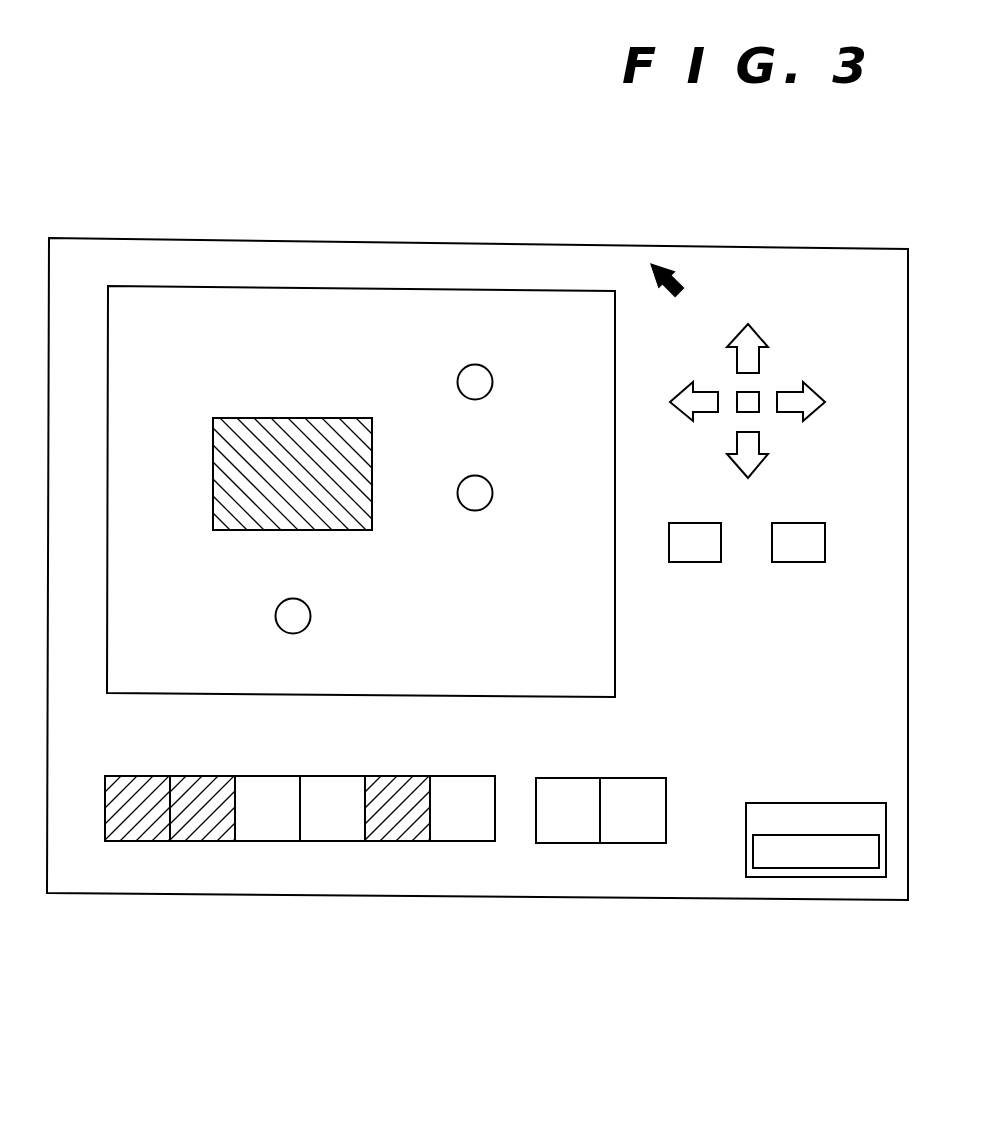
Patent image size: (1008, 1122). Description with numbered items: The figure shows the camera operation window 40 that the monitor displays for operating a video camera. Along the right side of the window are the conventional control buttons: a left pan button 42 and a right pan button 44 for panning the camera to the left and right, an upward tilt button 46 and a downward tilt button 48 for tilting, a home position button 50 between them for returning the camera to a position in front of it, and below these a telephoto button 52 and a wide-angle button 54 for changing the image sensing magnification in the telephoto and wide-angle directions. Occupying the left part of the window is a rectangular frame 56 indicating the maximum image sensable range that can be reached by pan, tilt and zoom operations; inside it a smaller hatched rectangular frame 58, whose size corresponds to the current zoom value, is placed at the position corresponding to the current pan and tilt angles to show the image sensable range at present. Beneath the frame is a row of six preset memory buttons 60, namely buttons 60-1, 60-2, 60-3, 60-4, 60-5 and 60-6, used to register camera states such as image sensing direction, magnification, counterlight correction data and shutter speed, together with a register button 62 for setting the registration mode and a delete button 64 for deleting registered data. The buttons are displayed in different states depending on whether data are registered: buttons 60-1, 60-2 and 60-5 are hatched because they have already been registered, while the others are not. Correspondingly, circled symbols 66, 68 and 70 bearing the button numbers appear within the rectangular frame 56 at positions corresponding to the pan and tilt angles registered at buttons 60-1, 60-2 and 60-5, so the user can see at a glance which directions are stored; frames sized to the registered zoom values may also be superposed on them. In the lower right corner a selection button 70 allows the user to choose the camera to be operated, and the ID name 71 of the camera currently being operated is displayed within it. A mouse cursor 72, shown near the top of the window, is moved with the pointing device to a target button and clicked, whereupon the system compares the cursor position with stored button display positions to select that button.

The camera operation window 40 is at (449, 242).
The left pan button 42 is at (682, 392).
The right pan button 44 is at (822, 395).
The upward tilt button 46 is at (755, 335).
The downward tilt button 48 is at (768, 456).
The home position button 50 is at (738, 411).
The telephoto button 52 is at (696, 562).
The wide-angle button 54 is at (800, 562).
The rectangular frame 56 is at (285, 286).
The rectangular frame (rectangular box) 58 is at (265, 418).
The preset memory buttons 60 is at (299, 883).
The preset memory button 60-1 is at (128, 776).
The preset memory button 60-2 is at (205, 776).
The preset memory button 60-3 is at (266, 776).
The preset memory button 60-4 is at (338, 776).
The preset memory button 60-5 is at (398, 776).
The preset memory button 60-6 is at (458, 776).
The register button 62 is at (562, 778).
The delete button 64 is at (630, 778).
The symbol 66 is at (528, 383).
The symbol 68 is at (528, 494).
The symbol / selection button 70 is at (347, 616).
The ID name of target camera 71 is at (753, 853).
The mouse cursor 72 is at (662, 266).